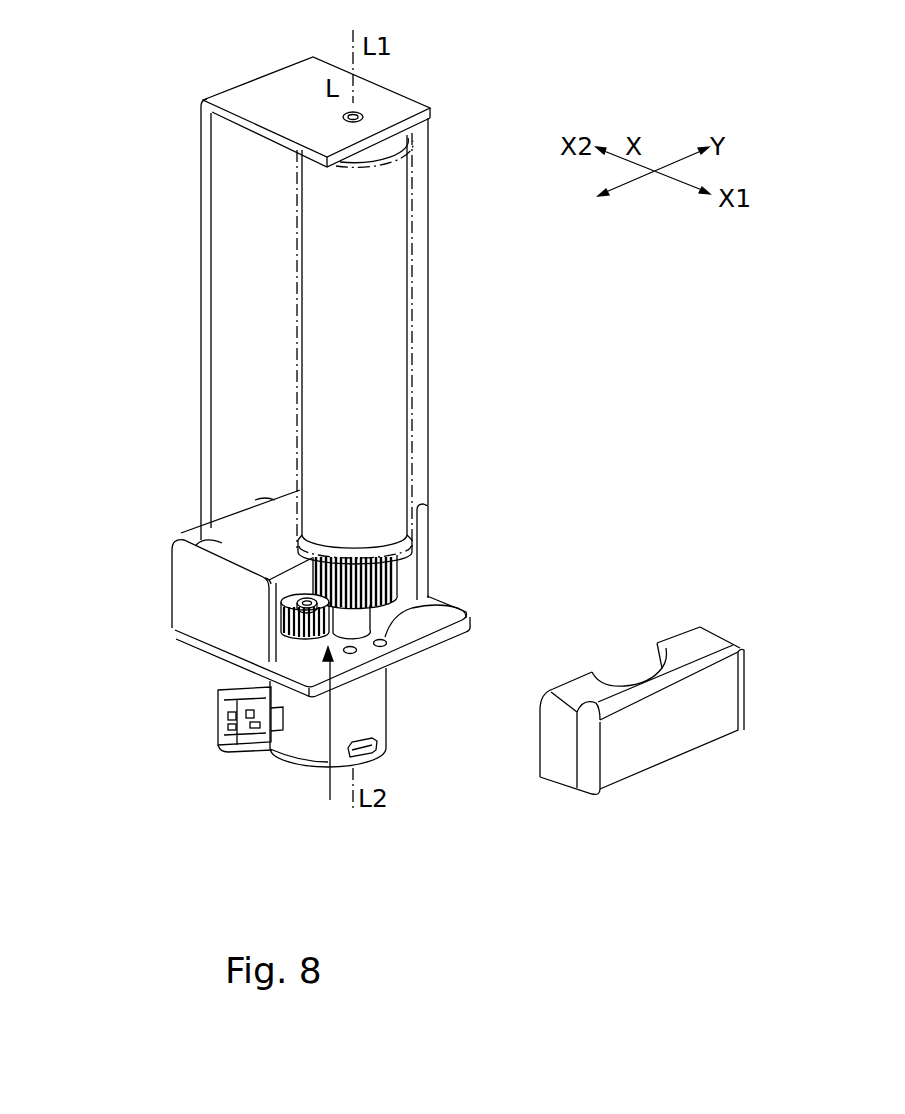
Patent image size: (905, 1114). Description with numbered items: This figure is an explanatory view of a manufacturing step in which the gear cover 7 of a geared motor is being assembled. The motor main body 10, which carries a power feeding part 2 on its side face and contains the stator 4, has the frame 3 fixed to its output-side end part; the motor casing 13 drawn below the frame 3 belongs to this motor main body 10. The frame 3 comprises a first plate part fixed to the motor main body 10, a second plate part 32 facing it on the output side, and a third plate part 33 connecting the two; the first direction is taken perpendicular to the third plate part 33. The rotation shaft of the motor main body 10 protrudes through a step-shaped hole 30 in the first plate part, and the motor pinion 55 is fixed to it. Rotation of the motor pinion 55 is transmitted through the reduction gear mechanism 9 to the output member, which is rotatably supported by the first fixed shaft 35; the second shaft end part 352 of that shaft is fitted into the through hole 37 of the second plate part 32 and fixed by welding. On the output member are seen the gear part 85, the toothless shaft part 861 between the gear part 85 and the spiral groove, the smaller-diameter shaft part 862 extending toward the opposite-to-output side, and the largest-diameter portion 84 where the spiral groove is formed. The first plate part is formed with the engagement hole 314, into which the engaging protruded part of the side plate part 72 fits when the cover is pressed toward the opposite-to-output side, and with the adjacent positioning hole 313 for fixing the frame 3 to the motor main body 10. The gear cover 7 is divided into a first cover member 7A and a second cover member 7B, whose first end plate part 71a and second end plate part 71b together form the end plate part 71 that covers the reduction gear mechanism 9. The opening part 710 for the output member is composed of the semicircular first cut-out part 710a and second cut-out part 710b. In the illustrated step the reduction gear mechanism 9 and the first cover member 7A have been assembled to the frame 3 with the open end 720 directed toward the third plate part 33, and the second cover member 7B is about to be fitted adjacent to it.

The power feeding part 2 is at (228, 752).
The frame 3 is at (336, 273).
The stator 4 is at (290, 752).
The gear cover 7 is at (450, 621).
The first cover member 7A is at (229, 523).
The second cover member 7B is at (705, 731).
The reduction gear mechanism 9 is at (334, 738).
The motor main body 10 is at (345, 738).
The motor 13 is at (317, 752).
The hole 30 is at (300, 612).
The second plate part 32 is at (263, 88).
The third plate part 33 is at (227, 221).
The first fixed shaft 35 is at (342, 117).
The through hole 37 is at (443, 88).
The second shaft end part 352 is at (363, 111).
The motor pinion 55 is at (296, 623).
The end plate part 71 is at (229, 523).
The first end plate part 71a is at (229, 523).
The second end plate part 71b is at (705, 699).
The side plate part 72 is at (677, 735).
The portion where the spiral groove is provided 84 is at (427, 278).
The gear part 85 is at (393, 578).
The hole 313 is at (357, 650).
The engagement hole 314 is at (354, 666).
The opening part 710 is at (150, 611).
The first cut-out part 710a is at (268, 580).
The second cut-out part 710b is at (700, 627).
The open end 720 is at (267, 505).
The shaft part 861 is at (397, 537).
The shaft part 862 is at (362, 622).